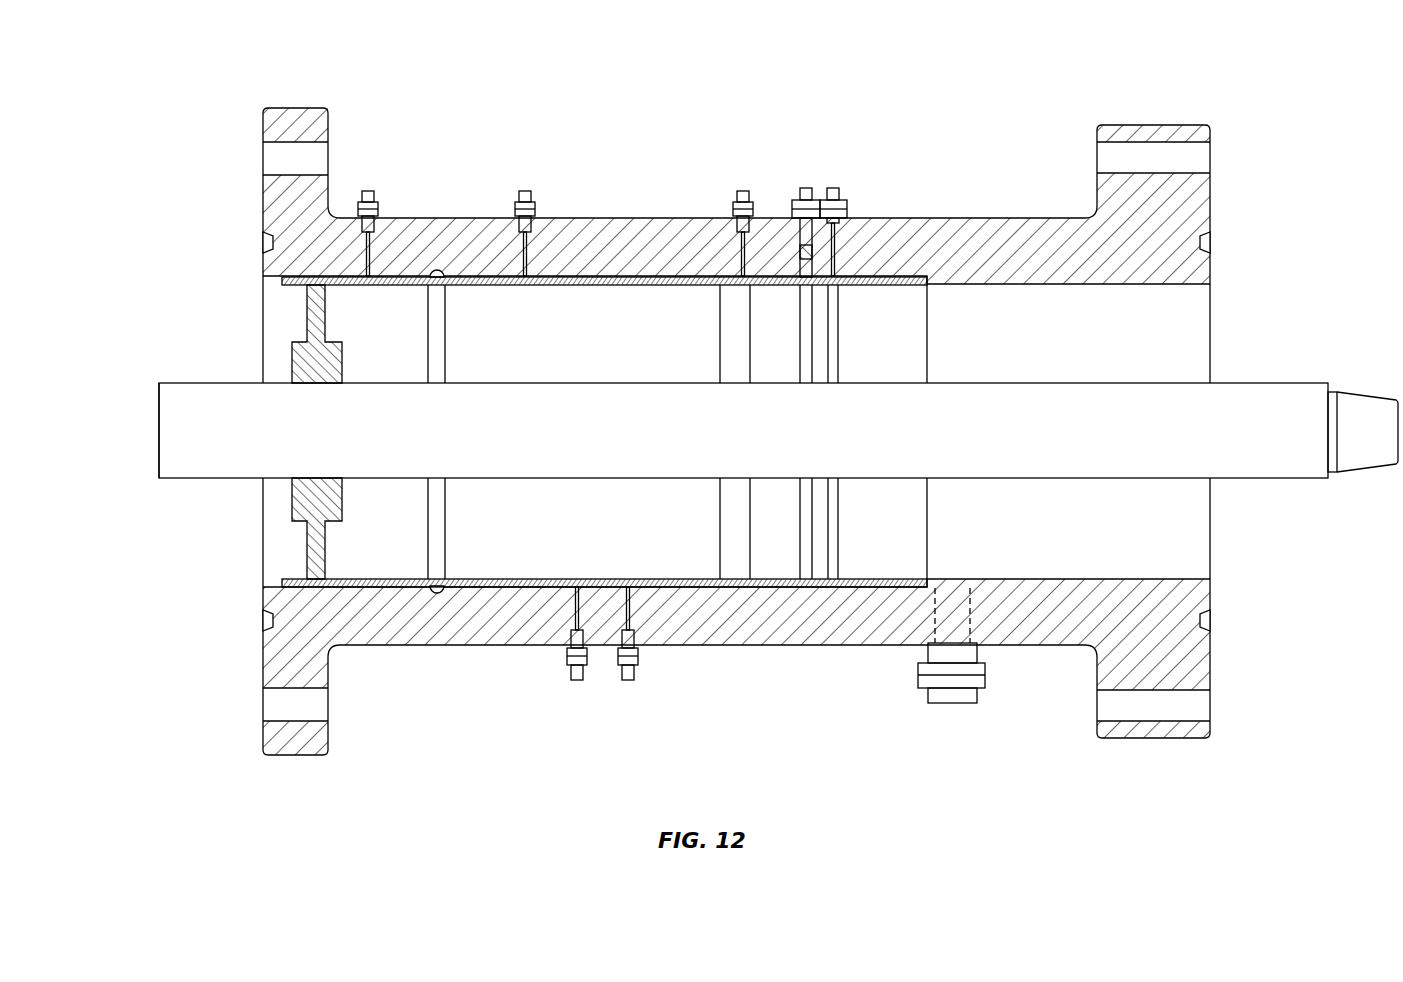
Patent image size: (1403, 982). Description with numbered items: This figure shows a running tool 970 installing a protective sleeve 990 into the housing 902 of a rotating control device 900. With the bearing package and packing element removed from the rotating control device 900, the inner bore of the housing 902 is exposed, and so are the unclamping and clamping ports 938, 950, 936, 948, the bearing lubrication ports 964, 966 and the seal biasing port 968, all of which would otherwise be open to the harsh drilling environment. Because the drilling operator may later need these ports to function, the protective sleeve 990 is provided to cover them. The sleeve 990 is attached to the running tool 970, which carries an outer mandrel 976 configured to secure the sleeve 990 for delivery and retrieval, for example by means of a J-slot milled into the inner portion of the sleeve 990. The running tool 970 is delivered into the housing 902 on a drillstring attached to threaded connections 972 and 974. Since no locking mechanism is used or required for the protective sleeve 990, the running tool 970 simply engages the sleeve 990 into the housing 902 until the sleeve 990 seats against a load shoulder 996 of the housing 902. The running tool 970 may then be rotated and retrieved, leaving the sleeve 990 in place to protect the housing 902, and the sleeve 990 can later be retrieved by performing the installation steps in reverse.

The rotating control device 900 is at (1042, 56).
The housing 902 is at (947, 235).
The clamping port 936 is at (368, 190).
The unclamping port 938 is at (525, 190).
The clamping port 948 is at (577, 682).
The unclamping port 950 is at (628, 682).
The bearing lubrication port 964 is at (743, 190).
The bearing lubrication port 966 is at (806, 188).
The seal biasing port 968 is at (833, 188).
The running tool 970 is at (1247, 463).
The threaded connection 972 is at (1364, 412).
The threaded connection 974 is at (155, 447).
The outer mandrel 976 is at (325, 367).
The protective sleeve 990 is at (625, 277).
The load shoulder 996 is at (925, 281).